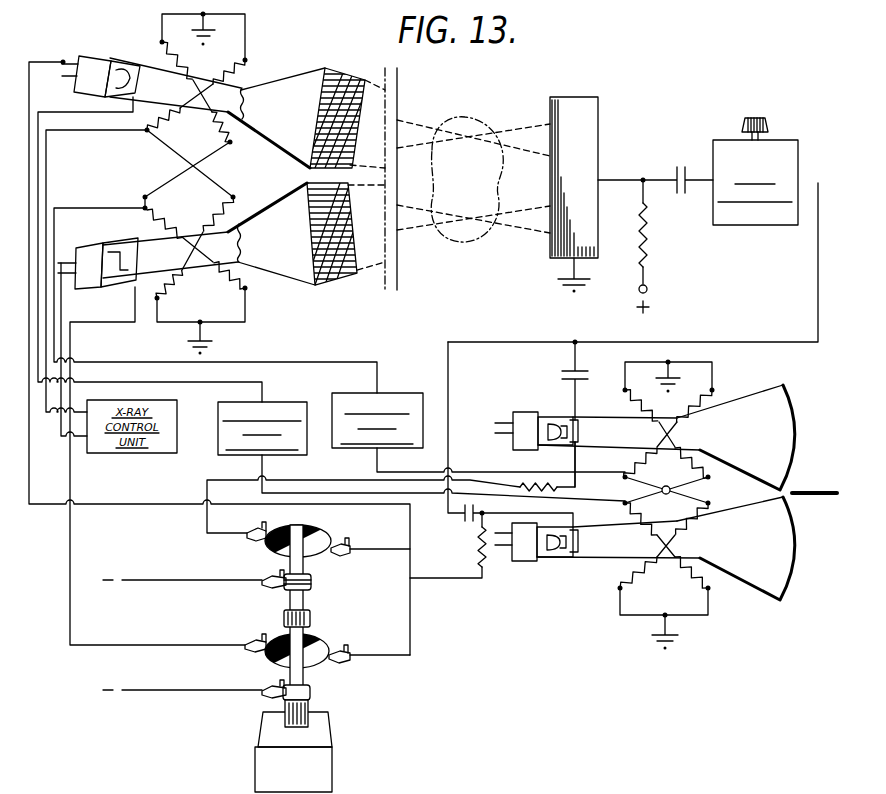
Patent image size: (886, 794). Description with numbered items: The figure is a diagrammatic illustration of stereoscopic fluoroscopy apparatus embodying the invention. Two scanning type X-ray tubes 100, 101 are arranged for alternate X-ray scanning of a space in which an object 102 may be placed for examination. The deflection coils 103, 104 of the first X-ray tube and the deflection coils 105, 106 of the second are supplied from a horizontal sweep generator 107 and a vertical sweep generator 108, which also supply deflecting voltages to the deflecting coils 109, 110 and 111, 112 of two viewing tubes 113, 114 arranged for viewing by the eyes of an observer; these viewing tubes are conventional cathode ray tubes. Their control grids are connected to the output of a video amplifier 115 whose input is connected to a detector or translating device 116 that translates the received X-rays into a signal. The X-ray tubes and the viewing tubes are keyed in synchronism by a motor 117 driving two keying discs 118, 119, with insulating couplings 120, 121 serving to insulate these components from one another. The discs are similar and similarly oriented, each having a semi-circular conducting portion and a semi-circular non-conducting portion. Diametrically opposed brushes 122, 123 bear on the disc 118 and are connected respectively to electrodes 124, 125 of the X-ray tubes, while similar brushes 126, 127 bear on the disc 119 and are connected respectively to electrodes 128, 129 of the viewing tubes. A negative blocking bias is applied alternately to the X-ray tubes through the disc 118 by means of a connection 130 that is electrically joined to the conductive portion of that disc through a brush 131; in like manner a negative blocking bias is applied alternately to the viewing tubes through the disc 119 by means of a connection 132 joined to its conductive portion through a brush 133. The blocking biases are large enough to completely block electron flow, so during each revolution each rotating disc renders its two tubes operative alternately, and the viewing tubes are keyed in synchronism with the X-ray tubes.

The scanning type X-ray tube 100 is at (278, 77).
The scanning type X-ray tube 101 is at (268, 275).
The object 102 is at (463, 118).
The deflection coil 103 is at (182, 58).
The deflection coil 104 is at (189, 127).
The deflection coil 105 is at (190, 214).
The deflection coil 106 is at (180, 292).
The horizontal sweep generator 107 is at (287, 402).
The vertical sweep generator 108 is at (398, 393).
The deflecting coil 109 is at (625, 390).
The deflecting coil 110 is at (715, 399).
The deflecting coil 111 is at (644, 509).
The deflecting coil 112 is at (632, 590).
The viewing tube 113 is at (770, 447).
The viewing tube 114 is at (770, 557).
The video amplifier 115 is at (777, 148).
The detector or translating device 116 is at (598, 122).
The motor 117 is at (333, 765).
The keying disc 118 is at (322, 645).
The keying disc 119 is at (328, 537).
The insulating coupling 120 is at (310, 717).
The insulating coupling 121 is at (310, 612).
The brush 122 is at (343, 663).
The brush 123 is at (252, 650).
The electrode 124 is at (143, 68).
The electrode 125 is at (137, 245).
The brush 126 is at (251, 539).
The brush 127 is at (334, 558).
The electrode 128 is at (578, 442).
The electrode 129 is at (578, 533).
The connection 130 is at (213, 702).
The brush 131 is at (262, 699).
The connection 132 is at (228, 585).
The brush 133 is at (279, 586).